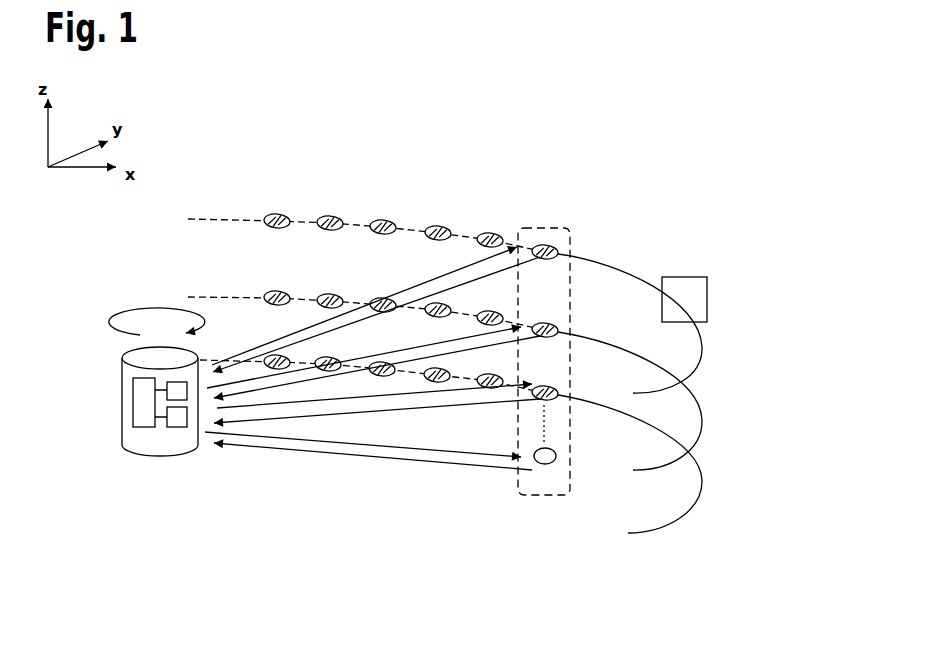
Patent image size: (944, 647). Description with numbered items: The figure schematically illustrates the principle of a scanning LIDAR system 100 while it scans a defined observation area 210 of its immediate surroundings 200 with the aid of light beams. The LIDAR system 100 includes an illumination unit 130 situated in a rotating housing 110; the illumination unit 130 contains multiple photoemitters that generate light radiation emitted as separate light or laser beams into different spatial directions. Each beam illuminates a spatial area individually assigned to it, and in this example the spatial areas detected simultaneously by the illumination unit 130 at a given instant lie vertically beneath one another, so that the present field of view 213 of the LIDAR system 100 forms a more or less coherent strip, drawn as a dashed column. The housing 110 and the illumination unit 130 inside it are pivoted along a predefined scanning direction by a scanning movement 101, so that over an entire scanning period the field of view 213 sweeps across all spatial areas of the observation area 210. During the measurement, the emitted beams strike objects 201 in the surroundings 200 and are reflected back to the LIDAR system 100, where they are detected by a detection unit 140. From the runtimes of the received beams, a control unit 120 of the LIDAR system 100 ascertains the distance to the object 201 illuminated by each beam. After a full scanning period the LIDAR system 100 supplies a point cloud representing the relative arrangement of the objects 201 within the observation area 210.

The scanning LIDAR system 100 is at (118, 506).
The scanning movement 101 is at (160, 307).
The rotating housing 110 is at (126, 446).
The control unit 120 is at (135, 400).
The illumination unit 130 is at (180, 369).
The detection unit 140 is at (173, 424).
The surroundings 200 is at (684, 263).
The object 201 is at (708, 297).
The observation area 210 is at (499, 187).
The field of view 213 is at (543, 498).